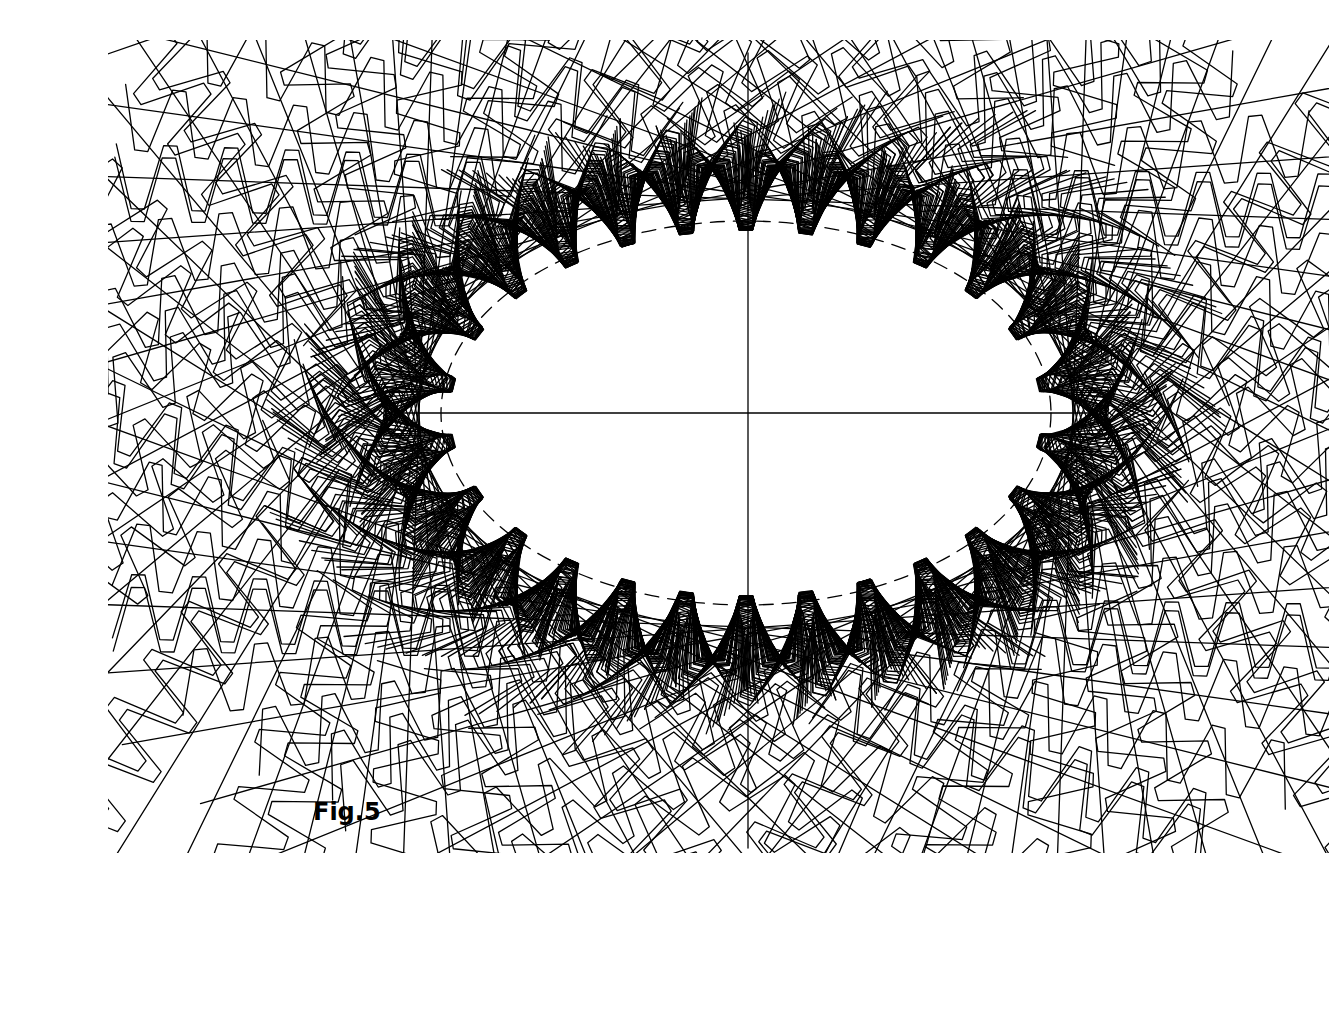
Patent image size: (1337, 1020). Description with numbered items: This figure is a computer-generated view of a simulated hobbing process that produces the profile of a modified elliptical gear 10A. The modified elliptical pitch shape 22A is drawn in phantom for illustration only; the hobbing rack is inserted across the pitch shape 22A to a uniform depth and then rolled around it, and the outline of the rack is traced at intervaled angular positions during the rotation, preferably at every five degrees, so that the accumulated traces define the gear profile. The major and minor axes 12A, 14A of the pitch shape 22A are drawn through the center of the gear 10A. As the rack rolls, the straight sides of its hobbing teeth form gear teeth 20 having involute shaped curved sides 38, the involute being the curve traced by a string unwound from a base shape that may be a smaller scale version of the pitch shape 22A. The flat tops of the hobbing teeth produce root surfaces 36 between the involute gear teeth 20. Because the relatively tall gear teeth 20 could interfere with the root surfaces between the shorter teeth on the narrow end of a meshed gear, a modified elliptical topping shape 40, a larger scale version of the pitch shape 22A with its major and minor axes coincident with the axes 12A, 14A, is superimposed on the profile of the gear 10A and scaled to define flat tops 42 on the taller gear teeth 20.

The modified elliptical gear 10A is at (690, 470).
The major axis 12A is at (808, 405).
The minor axis 14A is at (743, 318).
The gear teeth 20 is at (600, 230).
The modified elliptical pitch shape 22A is at (503, 302).
The root surfaces 36 is at (626, 230).
The involute shaped curved sides 38 is at (726, 198).
The modified elliptical topping shape 40 is at (710, 615).
The flat tops 42 is at (775, 615).